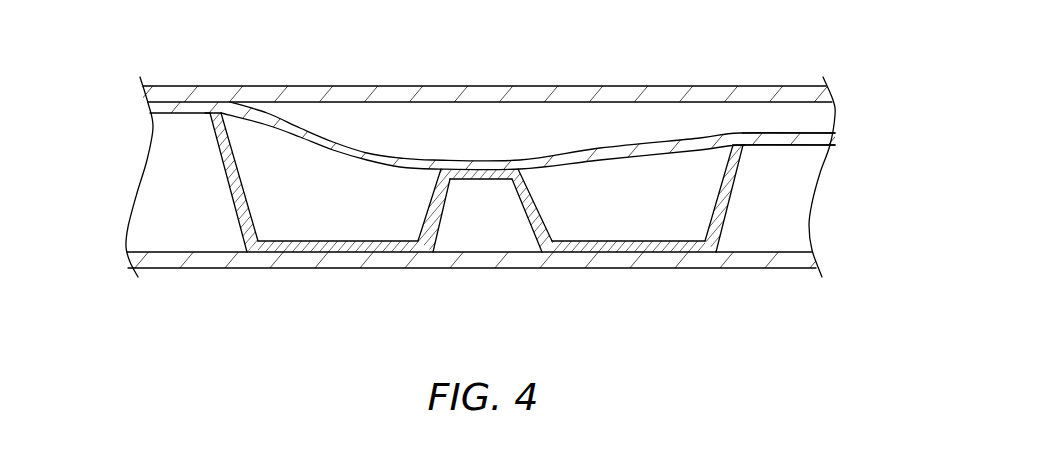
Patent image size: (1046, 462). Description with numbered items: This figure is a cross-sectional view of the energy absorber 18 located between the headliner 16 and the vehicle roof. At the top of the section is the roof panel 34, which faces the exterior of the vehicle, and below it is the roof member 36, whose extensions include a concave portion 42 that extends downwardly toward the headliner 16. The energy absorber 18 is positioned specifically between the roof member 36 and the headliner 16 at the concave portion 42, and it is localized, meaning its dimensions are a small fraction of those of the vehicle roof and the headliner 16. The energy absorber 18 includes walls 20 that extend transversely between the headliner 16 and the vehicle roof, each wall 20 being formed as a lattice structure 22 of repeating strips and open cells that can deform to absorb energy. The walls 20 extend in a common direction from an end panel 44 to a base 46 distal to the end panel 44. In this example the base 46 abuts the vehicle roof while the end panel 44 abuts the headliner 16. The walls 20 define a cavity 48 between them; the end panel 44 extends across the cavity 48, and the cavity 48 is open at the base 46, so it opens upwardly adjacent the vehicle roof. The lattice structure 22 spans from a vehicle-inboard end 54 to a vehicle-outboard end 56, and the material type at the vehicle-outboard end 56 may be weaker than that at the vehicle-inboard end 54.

The headliner 16 is at (778, 270).
The energy absorber 18 is at (480, 182).
The wall 20 is at (428, 205).
The lattice structure 22 is at (237, 207).
The roof panel 34 is at (490, 93).
The roof member 36 is at (800, 146).
The concave portion 42 is at (613, 157).
The end panel 44 is at (365, 243).
The base 46 is at (208, 113).
The cavity 48 is at (318, 197).
The vehicle-inboard end 54 is at (168, 188).
The vehicle-outboard end 56 is at (795, 198).